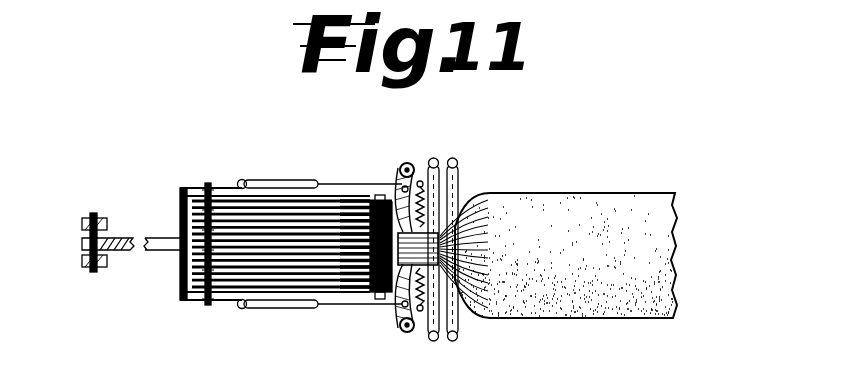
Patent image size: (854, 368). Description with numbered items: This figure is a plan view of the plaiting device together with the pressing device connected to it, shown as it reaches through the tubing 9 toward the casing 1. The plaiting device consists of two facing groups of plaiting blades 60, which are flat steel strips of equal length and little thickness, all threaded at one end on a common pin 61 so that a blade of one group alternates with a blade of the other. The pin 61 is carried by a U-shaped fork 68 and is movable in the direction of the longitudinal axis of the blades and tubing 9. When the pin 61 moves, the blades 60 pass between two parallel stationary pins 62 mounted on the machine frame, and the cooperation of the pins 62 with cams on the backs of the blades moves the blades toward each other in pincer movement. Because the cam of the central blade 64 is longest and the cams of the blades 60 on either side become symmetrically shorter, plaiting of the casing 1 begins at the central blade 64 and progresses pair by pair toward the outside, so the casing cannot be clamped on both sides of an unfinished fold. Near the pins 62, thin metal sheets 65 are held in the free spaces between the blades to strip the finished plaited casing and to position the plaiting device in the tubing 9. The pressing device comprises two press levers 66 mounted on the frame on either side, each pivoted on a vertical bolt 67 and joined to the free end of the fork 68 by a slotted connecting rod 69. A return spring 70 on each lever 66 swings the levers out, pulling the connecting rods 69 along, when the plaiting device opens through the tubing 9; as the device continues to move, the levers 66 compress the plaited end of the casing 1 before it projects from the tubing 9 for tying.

The casing 1 is at (606, 203).
The tubing 9 is at (458, 335).
The plaiting blades 60 is at (278, 280).
The pin 61 is at (207, 183).
The pins 62 is at (379, 299).
The central blade 64 is at (193, 250).
The thin metal sheets 65 is at (353, 200).
The press levers 66 is at (403, 230).
The vertical bolt 67 is at (411, 164).
The U-shaped fork 68 is at (186, 300).
The connecting rod 69 is at (280, 180).
The return spring 70 is at (430, 198).